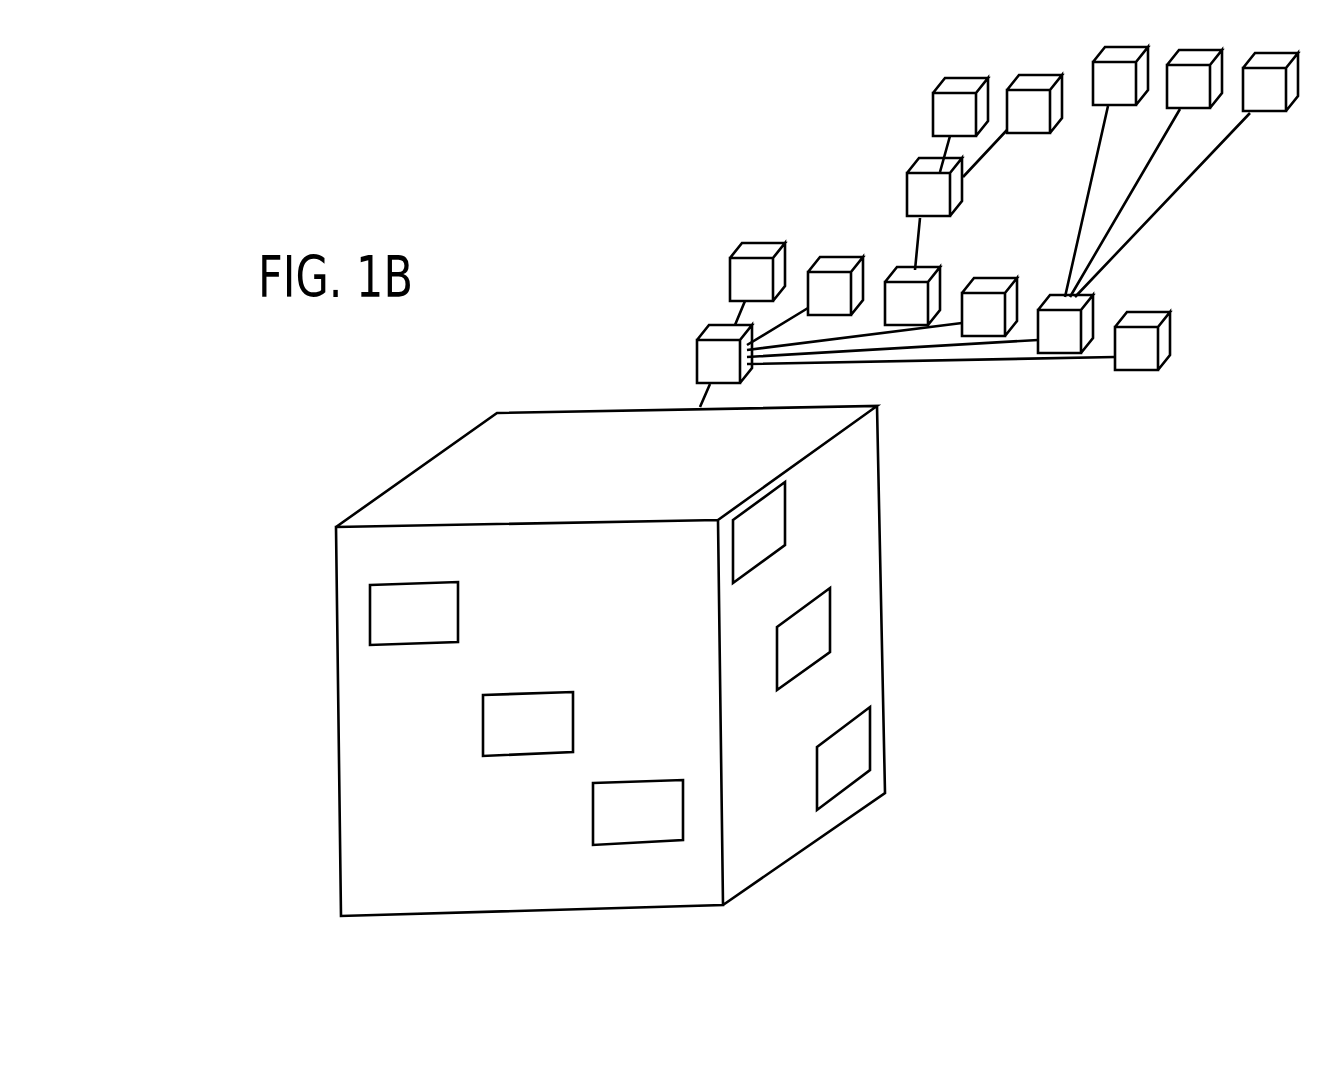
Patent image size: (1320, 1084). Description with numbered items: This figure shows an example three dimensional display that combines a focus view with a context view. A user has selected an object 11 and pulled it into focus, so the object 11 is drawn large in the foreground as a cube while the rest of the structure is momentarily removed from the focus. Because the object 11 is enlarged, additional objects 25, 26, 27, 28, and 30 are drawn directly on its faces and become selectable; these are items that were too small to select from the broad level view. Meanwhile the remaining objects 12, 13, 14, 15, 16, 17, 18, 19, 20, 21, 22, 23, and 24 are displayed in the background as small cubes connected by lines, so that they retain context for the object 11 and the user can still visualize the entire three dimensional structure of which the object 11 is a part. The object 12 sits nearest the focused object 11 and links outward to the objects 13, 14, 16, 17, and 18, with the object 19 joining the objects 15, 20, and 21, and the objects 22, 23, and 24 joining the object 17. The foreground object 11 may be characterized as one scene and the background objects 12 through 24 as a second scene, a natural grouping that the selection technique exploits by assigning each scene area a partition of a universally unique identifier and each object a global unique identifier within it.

The object 11 is at (335, 729).
The object 12 is at (724, 354).
The object 13 is at (757, 272).
The object 14 is at (835, 286).
The object 15 is at (912, 296).
The object 16 is at (989, 307).
The object 17 is at (1065, 324).
The object 18 is at (1142, 341).
The object 19 is at (934, 187).
The object 20 is at (960, 107).
The object 21 is at (1034, 104).
The object 22 is at (1120, 76).
The object 23 is at (1194, 79).
The object 24 is at (1270, 82).
The additional object 25 is at (414, 613).
The additional object 26 is at (528, 724).
The additional object 27 is at (638, 812).
The additional object 28 is at (781, 586).
The additional object 30 is at (843, 758).